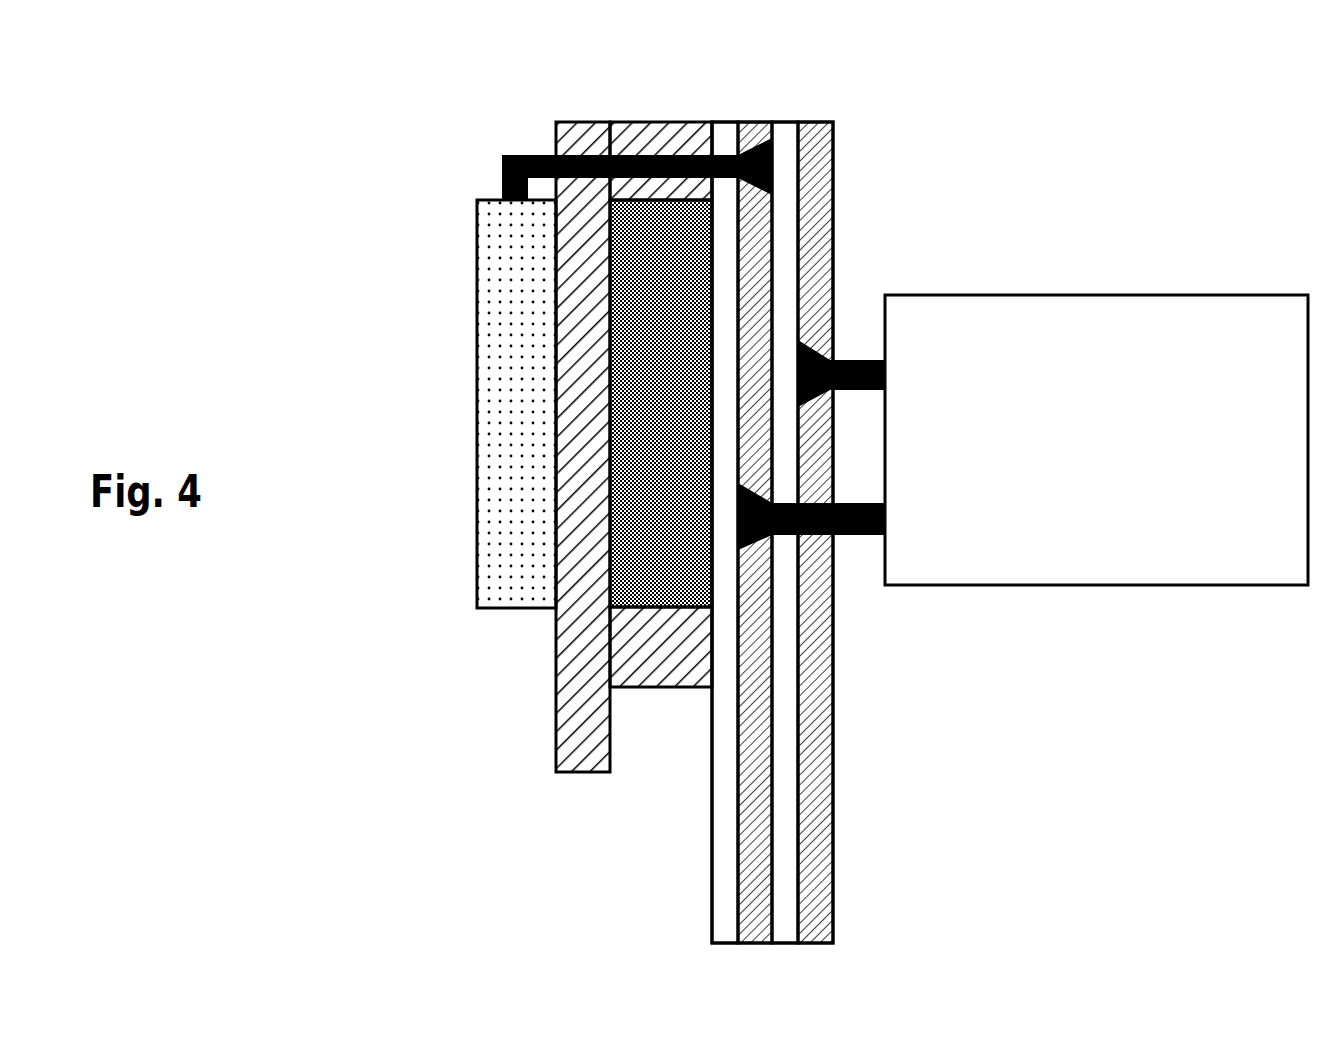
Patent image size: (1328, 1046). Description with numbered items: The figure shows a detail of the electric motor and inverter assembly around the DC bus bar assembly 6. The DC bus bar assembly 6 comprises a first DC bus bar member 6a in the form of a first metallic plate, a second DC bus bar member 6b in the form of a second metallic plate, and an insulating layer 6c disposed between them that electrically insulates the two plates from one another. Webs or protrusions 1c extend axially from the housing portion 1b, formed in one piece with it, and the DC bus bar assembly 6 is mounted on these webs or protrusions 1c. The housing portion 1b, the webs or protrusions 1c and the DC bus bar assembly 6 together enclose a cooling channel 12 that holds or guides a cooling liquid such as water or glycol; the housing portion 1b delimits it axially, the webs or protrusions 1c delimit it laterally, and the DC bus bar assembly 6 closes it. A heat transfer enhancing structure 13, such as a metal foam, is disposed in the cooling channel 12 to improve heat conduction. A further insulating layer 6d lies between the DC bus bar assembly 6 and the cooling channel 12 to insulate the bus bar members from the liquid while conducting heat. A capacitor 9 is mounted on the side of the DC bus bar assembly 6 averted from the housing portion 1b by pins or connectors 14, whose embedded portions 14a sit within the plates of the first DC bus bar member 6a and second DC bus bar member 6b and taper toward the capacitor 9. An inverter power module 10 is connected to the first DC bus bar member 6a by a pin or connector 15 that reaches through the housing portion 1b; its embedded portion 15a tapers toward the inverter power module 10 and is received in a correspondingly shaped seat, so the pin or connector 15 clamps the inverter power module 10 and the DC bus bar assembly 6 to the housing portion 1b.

The housing portion 1b is at (556, 647).
The webs or protrusions 1c is at (633, 118).
The DC bus bar assembly 6 is at (925, 873).
The first DC bus bar member 6a is at (737, 895).
The second DC bus bar member 6b is at (835, 150).
The insulating layer 6c is at (791, 216).
The further insulating layer 6d is at (725, 800).
The capacitor 9 is at (1108, 465).
The inverter power module 10 is at (541, 410).
The cooling channel 12 is at (683, 410).
The heat transfer enhancing structure 13 is at (660, 497).
The pins or connectors 14 is at (863, 360).
The embedded portion 14a is at (835, 340).
The pin or connector 15 is at (528, 155).
The embedded portion 15a is at (737, 128).